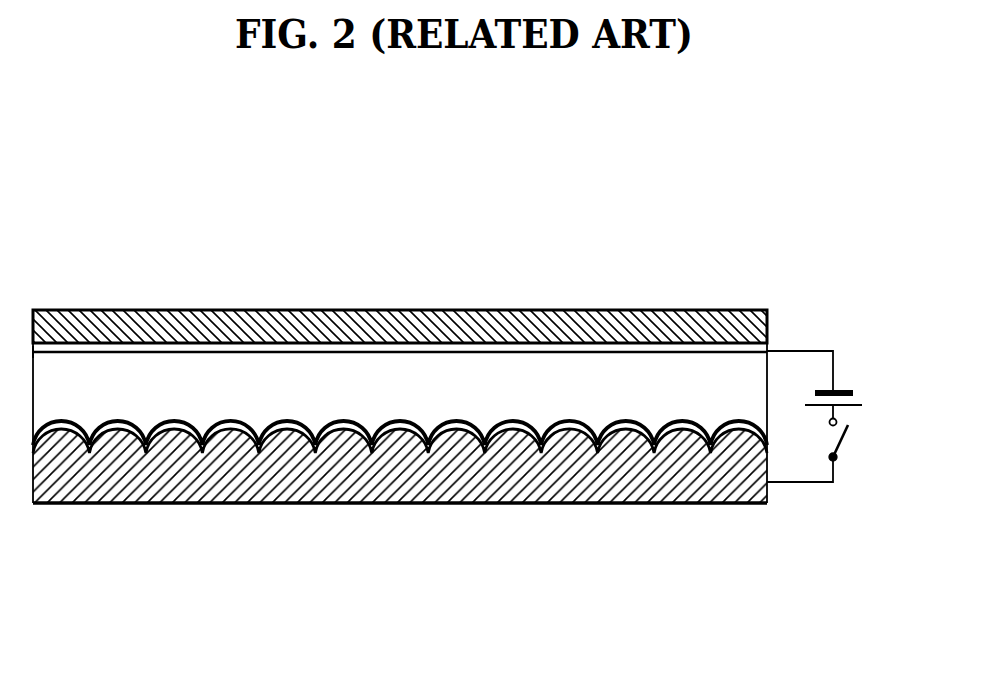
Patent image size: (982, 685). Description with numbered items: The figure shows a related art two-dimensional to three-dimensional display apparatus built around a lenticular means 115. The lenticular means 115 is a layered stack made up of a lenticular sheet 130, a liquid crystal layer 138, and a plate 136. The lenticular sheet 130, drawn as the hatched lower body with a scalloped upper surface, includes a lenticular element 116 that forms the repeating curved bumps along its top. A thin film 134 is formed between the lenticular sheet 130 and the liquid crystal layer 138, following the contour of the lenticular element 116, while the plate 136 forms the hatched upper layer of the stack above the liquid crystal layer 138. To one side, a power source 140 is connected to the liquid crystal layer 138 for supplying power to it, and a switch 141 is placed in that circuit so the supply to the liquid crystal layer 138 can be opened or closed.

The lenticular means 115 is at (461, 525).
The lenticular element 116 is at (287, 438).
The lenticular sheet 130 is at (343, 492).
The thin film 134 is at (632, 426).
The plate 136 is at (458, 323).
The liquid crystal layer 138 is at (387, 370).
The power source 140 is at (845, 388).
The switch 141 is at (845, 440).